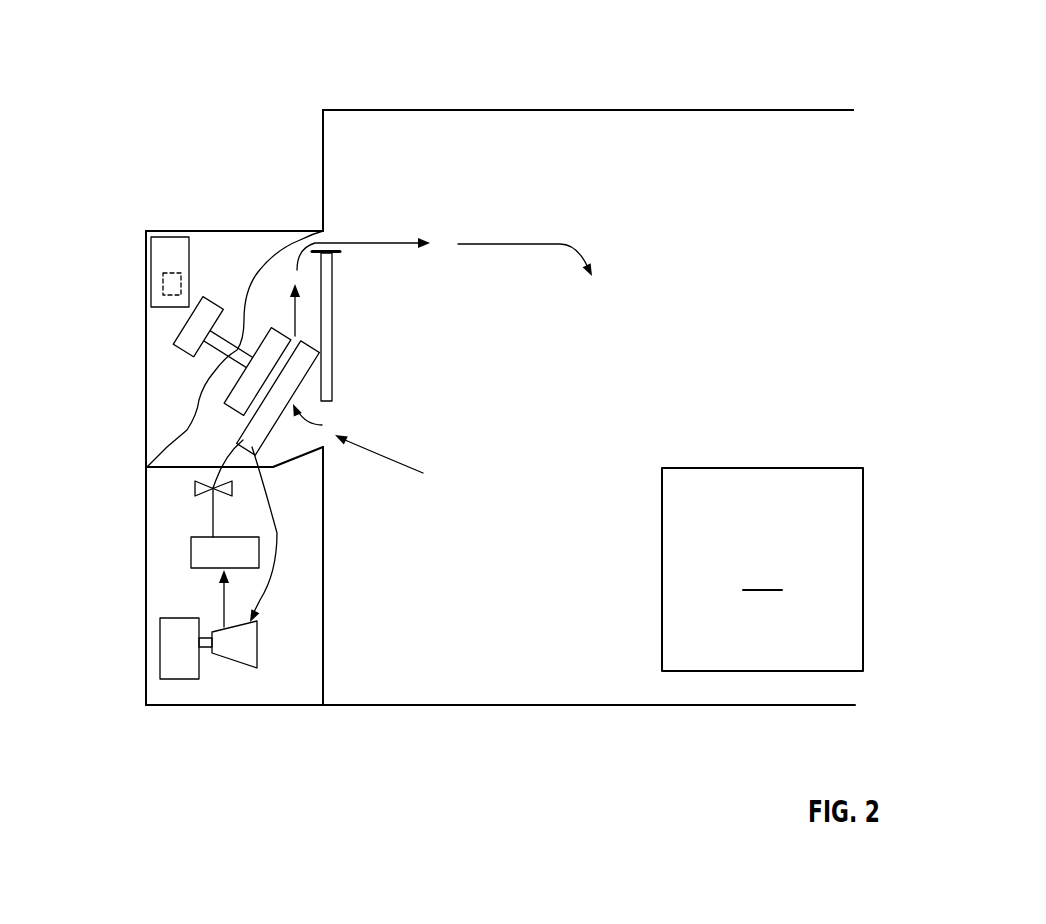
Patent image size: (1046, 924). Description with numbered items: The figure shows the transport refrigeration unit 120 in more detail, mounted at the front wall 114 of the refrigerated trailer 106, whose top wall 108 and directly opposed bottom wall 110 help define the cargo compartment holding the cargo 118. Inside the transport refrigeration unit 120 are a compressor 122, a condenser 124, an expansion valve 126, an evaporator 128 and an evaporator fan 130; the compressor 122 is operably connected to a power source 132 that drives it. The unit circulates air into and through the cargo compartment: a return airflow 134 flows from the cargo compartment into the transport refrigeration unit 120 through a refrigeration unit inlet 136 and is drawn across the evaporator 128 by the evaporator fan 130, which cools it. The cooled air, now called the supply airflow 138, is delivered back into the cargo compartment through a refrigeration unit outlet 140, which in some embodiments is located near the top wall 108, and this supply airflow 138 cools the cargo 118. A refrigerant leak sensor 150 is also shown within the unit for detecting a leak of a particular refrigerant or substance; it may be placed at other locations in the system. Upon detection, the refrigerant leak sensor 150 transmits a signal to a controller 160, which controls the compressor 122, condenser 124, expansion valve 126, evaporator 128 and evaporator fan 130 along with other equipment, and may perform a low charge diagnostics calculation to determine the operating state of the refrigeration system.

The trailer 106 is at (795, 145).
The top wall 108 is at (557, 109).
The bottom wall 110 is at (505, 706).
The front wall 114 is at (323, 180).
The cargo 118 is at (762, 569).
The transport refrigeration unit 120 is at (132, 206).
The compressor 122 is at (242, 663).
The condenser 124 is at (190, 555).
The expansion valve 126 is at (193, 487).
The evaporator 128 is at (302, 362).
The evaporator fan 130 is at (228, 393).
The power source 132 is at (163, 648).
The return airflow 134 is at (390, 465).
The refrigeration unit inlet 136 is at (338, 420).
The supply airflow 138 is at (509, 242).
The refrigeration unit outlet 140 is at (340, 230).
The refrigerant leak sensor 150 is at (168, 252).
The controller 160 is at (163, 288).